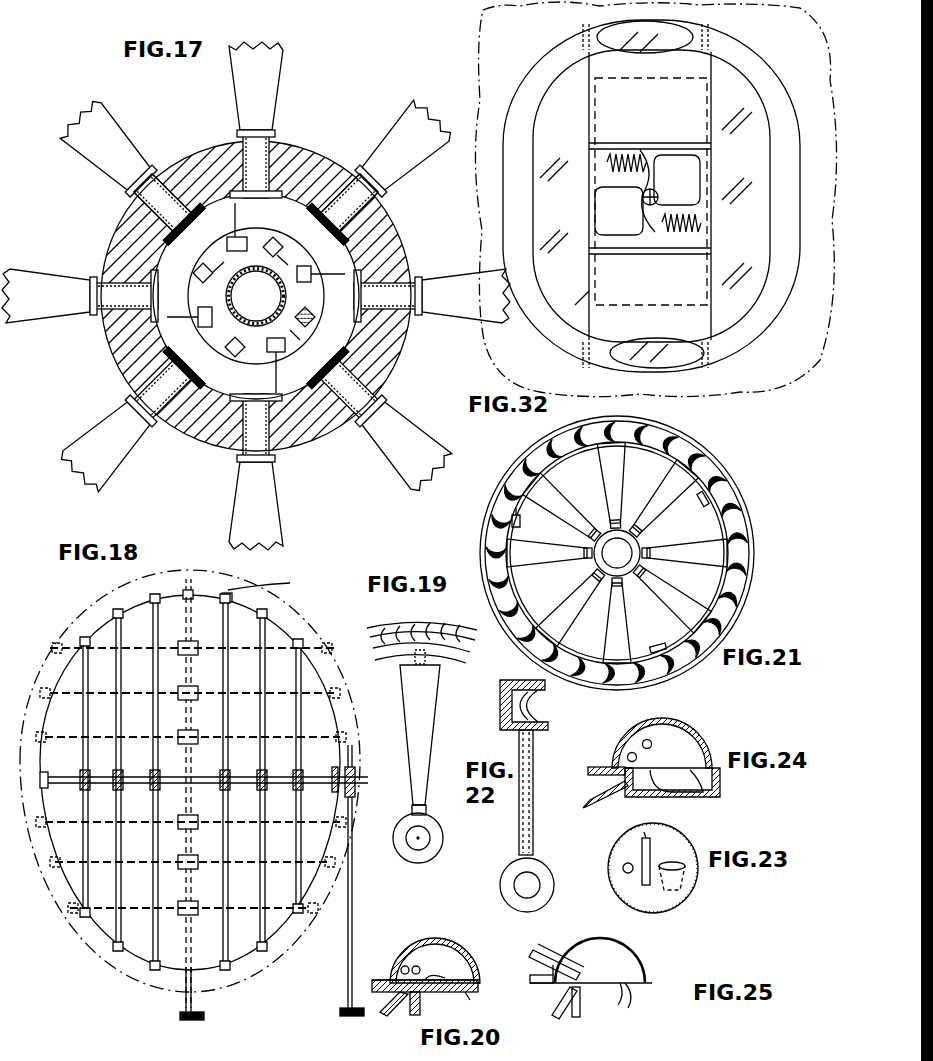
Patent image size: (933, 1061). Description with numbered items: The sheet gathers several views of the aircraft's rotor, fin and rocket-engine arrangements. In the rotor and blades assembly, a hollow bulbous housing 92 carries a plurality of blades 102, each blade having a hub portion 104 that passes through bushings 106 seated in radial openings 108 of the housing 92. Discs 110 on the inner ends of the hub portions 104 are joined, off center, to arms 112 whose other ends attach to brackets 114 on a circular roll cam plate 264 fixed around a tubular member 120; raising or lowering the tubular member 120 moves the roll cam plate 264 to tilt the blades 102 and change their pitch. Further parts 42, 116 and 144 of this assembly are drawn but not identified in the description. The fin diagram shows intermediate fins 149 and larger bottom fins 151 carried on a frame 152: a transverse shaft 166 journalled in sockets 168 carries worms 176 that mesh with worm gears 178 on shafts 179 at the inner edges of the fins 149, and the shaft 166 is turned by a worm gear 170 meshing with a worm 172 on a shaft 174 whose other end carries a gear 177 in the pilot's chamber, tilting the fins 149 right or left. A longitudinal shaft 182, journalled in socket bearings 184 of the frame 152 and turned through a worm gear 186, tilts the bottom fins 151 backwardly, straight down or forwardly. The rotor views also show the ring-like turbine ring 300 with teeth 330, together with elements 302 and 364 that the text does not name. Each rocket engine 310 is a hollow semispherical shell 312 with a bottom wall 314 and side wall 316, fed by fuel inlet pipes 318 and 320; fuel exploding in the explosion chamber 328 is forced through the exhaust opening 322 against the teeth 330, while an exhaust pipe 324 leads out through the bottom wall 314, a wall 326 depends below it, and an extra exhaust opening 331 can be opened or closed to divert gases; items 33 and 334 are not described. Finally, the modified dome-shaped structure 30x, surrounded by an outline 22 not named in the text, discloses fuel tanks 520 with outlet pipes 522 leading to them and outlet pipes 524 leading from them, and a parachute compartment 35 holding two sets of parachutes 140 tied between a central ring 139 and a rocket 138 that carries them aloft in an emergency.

In FIG. 17, the blades 102 is at (246, 78).
In FIG. 21, the blades 102 is at (683, 482).
In FIG. 19, the blades 102 is at (425, 750).
In FIG. 22, the blades 102 is at (532, 776).
In FIG. 17, the hub portion 104 is at (262, 155).
In FIG. 17, the bushings 106 is at (237, 148).
In FIG. 17, the radial openings 108 is at (130, 214).
In FIG. 17, the discs 110 is at (310, 185).
In FIG. 17, the arm 112 is at (233, 224).
In FIG. 17, the bracket 114 is at (326, 240).
In FIG. 17, the support block 116 is at (238, 252).
In FIG. 17, the tubular member 120 is at (256, 296).
In FIG. 17, the locking block 42 is at (313, 305).
In FIG. 17, the circular roll cam plate 264 is at (265, 362).
In FIG. 17, the mounting plate 144 is at (322, 356).
In FIG. 17, the housing 92 is at (405, 236).
In FIG. 21, the housing 92 is at (628, 553).
In FIG. 19, the housing 92 is at (432, 838).
In FIG. 22, the housing 92 is at (530, 880).
In FIG. 32, the outlet pipes 522 is at (558, 22).
In FIG. 32, the dome-shaped structure 30x is at (720, 12).
In FIG. 32, the outline 22 is at (500, 73).
In FIG. 32, the fuel tanks 520 is at (594, 112).
In FIG. 32, the parachute compartment 35 is at (612, 150).
In FIG. 32, the rocket 138 is at (692, 165).
In FIG. 32, the parachutes 140 is at (690, 180).
In FIG. 32, the ring 139 is at (649, 238).
In FIG. 32, the outlet pipes 524 is at (572, 373).
In FIG. 21, the turbine ring 300 is at (745, 503).
In FIG. 19, the turbine ring 300 is at (457, 617).
In FIG. 21, the inner ring 302 is at (730, 551).
In FIG. 19, the inner ring 302 is at (428, 672).
In FIG. 21, the tab 364 is at (520, 528).
In FIG. 21, the teeth 330 is at (740, 600).
In FIG. 19, the teeth 330 is at (462, 650).
In FIG. 22, the teeth 330 is at (532, 706).
In FIG. 24, the teeth 330 is at (688, 790).
In FIG. 24, the rocket engines 310 is at (632, 728).
In FIG. 23, the rocket engines 310 is at (610, 884).
In FIG. 20, the rocket engines 310 is at (398, 948).
In FIG. 25, the rocket engines 310 is at (626, 933).
In FIG. 24, the explosion chamber 328 is at (675, 740).
In FIG. 20, the explosion chamber 328 is at (440, 935).
In FIG. 24, the exhaust opening 322 is at (675, 770).
In FIG. 23, the exhaust opening 322 is at (702, 881).
In FIG. 20, the exhaust opening 322 is at (430, 992).
In FIG. 25, the exhaust opening 322 is at (631, 1001).
In FIG. 24, the holes 33 is at (638, 757).
In FIG. 24, the exhaust pipe 324 is at (602, 788).
In FIG. 23, the exhaust pipe 324 is at (623, 868).
In FIG. 20, the exhaust pipe 324 is at (384, 1016).
In FIG. 25, the exhaust pipe 324 is at (557, 1019).
In FIG. 23, the semispherical shell 312 is at (612, 850).
In FIG. 20, the semispherical shell 312 is at (465, 943).
In FIG. 25, the semispherical shell 312 is at (640, 961).
In FIG. 23, the wall 326 is at (648, 836).
In FIG. 25, the wall 326 is at (582, 1019).
In FIG. 23, the bottom wall 314 is at (684, 890).
In FIG. 20, the bottom wall 314 is at (468, 996).
In FIG. 25, the bottom wall 314 is at (638, 991).
In FIG. 20, the side wall 316 is at (476, 960).
In FIG. 25, the side wall 316 is at (636, 973).
In FIG. 20, the holes 334 is at (417, 961).
In FIG. 20, the extra exhaust opening 331 is at (445, 973).
In FIG. 25, the fuel inlet pipe 318 is at (547, 946).
In FIG. 25, the fuel inlet pipe 320 is at (550, 966).
In FIG. 18, the socket bearings 184 is at (200, 574).
In FIG. 18, the intermediate fins 149 is at (286, 591).
In FIG. 18, the frame 152 is at (100, 626).
In FIG. 18, the bottom fins 151 is at (138, 912).
In FIG. 18, the worm gears 178 is at (193, 655).
In FIG. 18, the worms 176 is at (193, 700).
In FIG. 18, the worm gear 170 is at (355, 761).
In FIG. 18, the sockets 168 is at (358, 769).
In FIG. 18, the shaft 166 is at (182, 785).
In FIG. 18, the shafts 179 is at (224, 766).
In FIG. 18, the worm 172 is at (358, 801).
In FIG. 18, the shaft 174 is at (356, 891).
In FIG. 18, the shaft 182 is at (195, 1003).
In FIG. 18, the worm gear 186 is at (203, 1023).
In FIG. 18, the gear 177 is at (342, 1017).